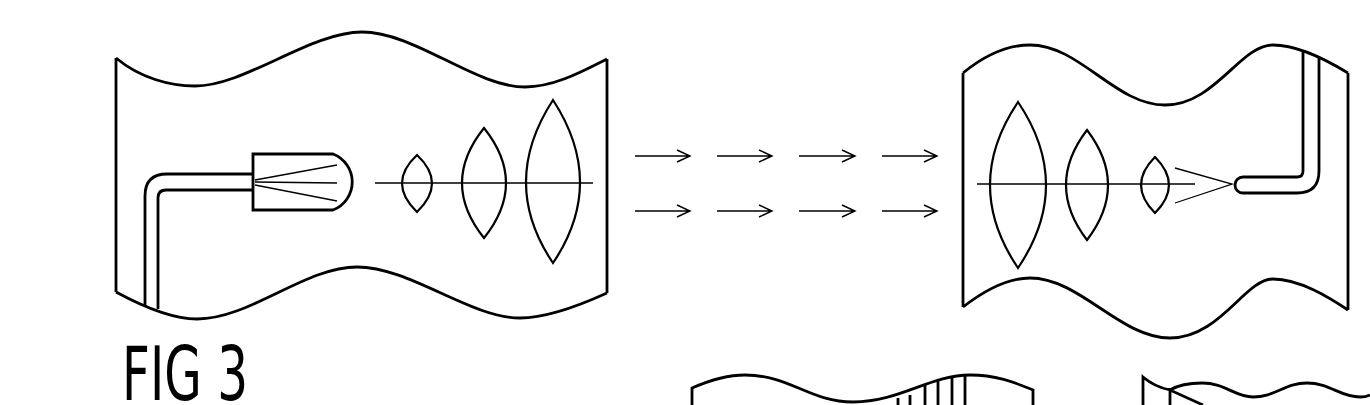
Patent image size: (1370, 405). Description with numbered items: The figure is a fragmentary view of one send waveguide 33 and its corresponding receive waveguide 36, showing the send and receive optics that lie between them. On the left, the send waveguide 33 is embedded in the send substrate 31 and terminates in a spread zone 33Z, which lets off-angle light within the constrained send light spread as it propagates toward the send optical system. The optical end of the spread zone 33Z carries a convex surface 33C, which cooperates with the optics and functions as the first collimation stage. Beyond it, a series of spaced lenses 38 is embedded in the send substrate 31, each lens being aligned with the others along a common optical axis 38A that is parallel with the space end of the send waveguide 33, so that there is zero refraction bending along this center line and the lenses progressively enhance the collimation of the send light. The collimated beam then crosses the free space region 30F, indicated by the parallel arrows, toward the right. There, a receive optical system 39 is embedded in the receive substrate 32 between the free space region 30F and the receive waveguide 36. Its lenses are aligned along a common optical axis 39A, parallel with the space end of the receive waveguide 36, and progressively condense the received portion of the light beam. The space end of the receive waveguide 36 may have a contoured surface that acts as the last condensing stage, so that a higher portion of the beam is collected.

The send substrate 31 is at (280, 106).
The send waveguide 33 is at (208, 182).
The spread zone 33Z is at (298, 208).
The convex surface 33C is at (350, 177).
The spaced lenses 38 is at (523, 135).
The common optical axis 38A is at (590, 183).
The free space region 30F is at (805, 95).
The common optical axis 39A is at (980, 182).
The receive optical system 39 is at (1070, 137).
The receive substrate 32 is at (1240, 124).
The receive waveguide 36 is at (1248, 180).